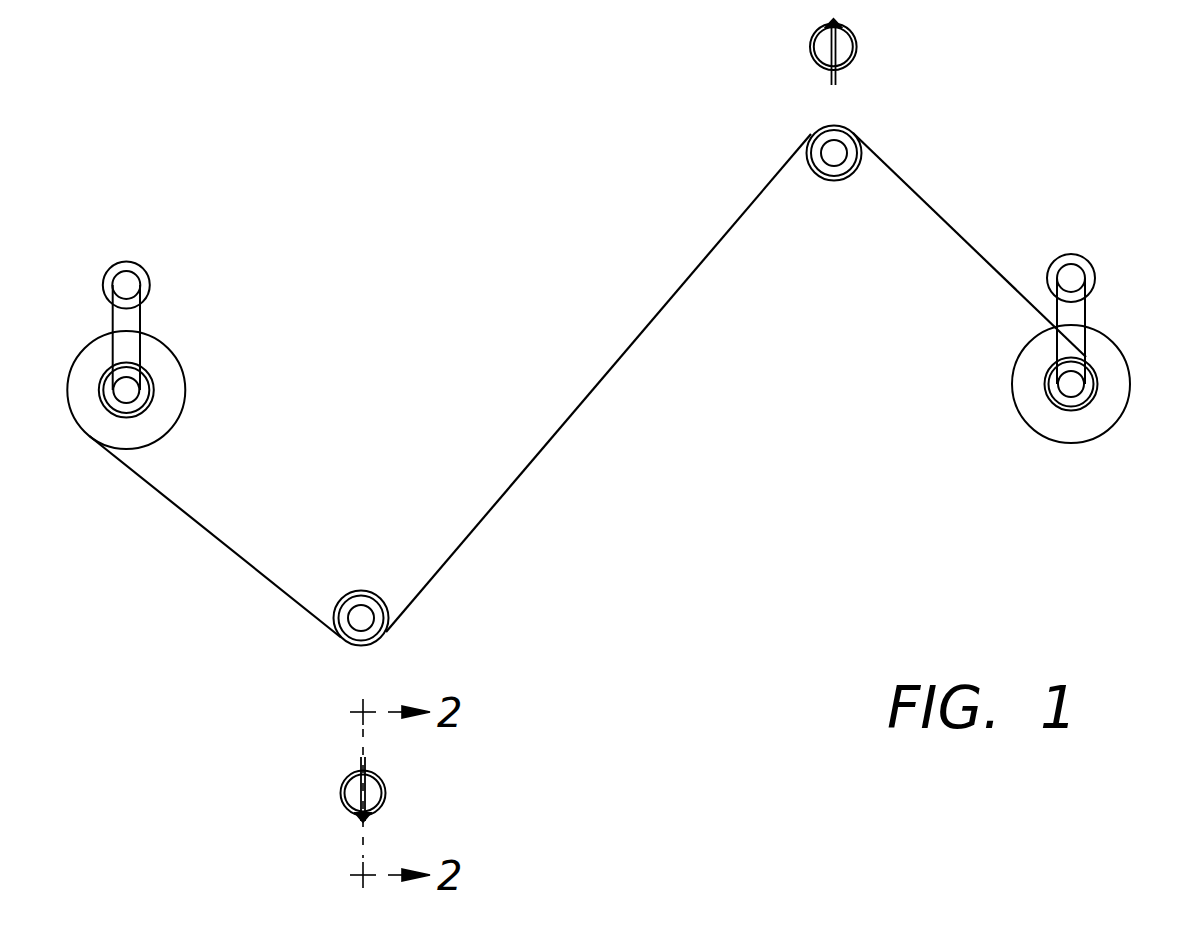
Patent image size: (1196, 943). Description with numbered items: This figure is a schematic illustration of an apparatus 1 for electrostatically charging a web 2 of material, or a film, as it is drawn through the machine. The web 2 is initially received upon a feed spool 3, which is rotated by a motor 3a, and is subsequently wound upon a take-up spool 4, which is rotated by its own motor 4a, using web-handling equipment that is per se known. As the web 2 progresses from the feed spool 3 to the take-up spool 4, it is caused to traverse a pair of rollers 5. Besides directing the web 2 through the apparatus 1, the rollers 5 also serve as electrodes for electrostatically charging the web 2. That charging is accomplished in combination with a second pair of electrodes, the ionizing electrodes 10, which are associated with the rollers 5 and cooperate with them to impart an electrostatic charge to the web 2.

The apparatus 1 is at (401, 333).
The web 2 is at (217, 538).
The feed spool 3 is at (140, 393).
The motor 3a is at (145, 283).
The take-up spool 4 is at (1048, 390).
The motor 4a is at (1089, 279).
The rollers 5 is at (840, 160).
The ionizing electrodes 10 is at (857, 47).